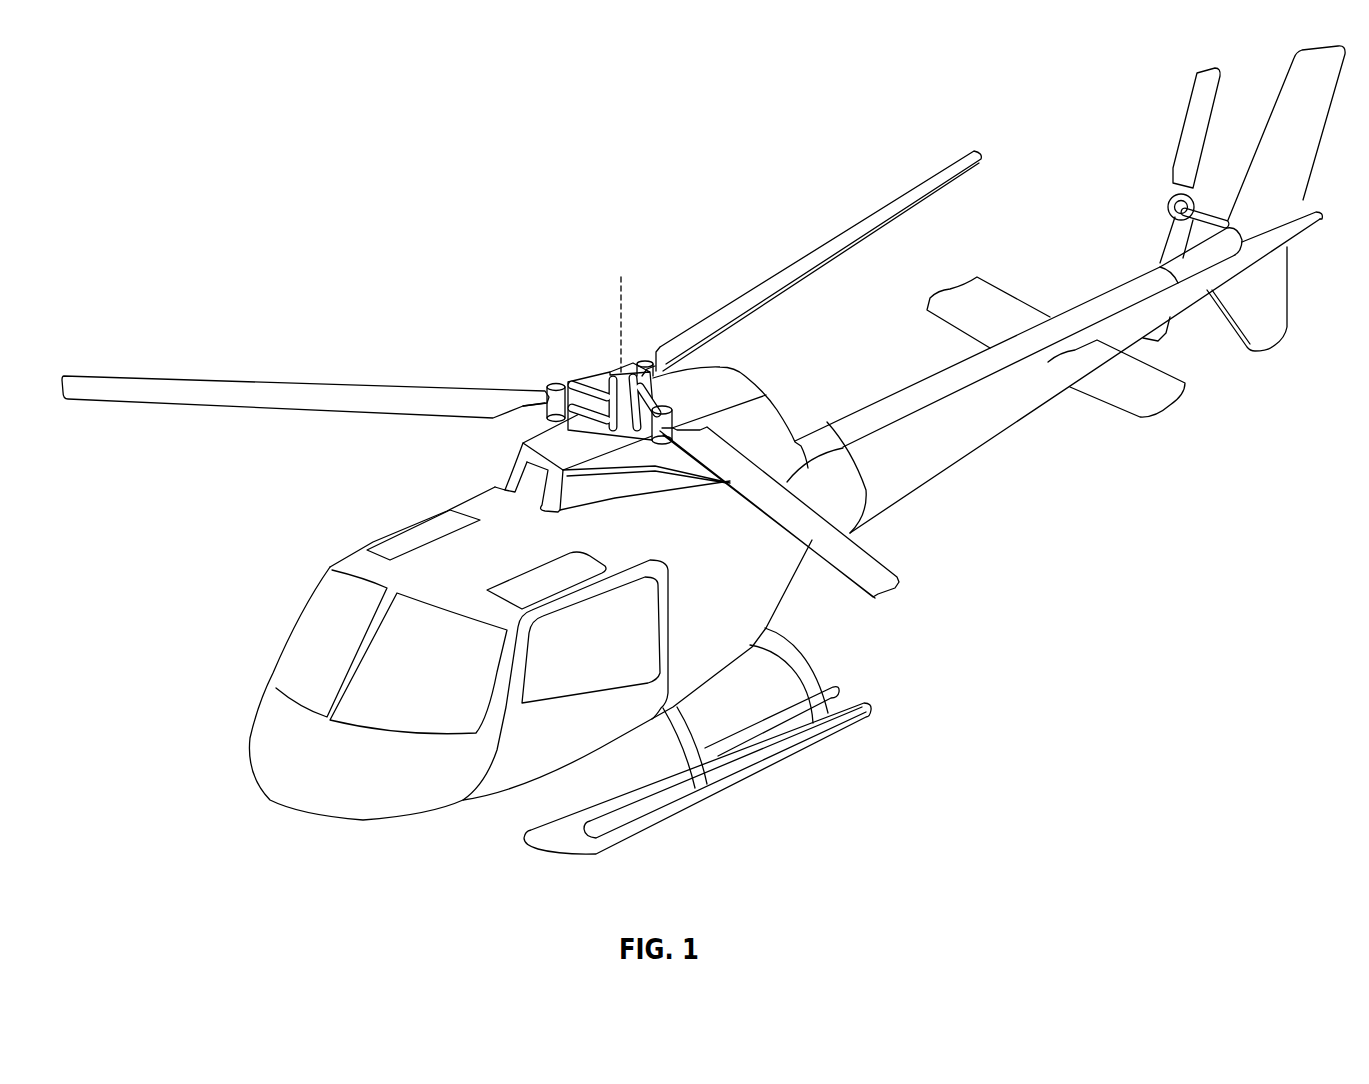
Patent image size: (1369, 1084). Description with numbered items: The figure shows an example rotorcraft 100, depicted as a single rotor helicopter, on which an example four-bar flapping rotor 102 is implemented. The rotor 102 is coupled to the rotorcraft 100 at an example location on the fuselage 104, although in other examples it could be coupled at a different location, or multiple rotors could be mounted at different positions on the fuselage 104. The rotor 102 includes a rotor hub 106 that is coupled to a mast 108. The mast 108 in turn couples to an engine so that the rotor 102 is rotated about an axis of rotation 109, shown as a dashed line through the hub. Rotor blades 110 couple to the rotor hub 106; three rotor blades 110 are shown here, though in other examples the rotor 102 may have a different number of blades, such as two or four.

The rotorcraft 100 is at (350, 157).
The four-bar flapping rotor 102 is at (571, 302).
The fuselage 104 is at (347, 553).
The rotor hub 106 is at (626, 362).
The mast 108 is at (657, 368).
The axis of rotation 109 is at (622, 293).
The rotor blades 110 is at (393, 390).